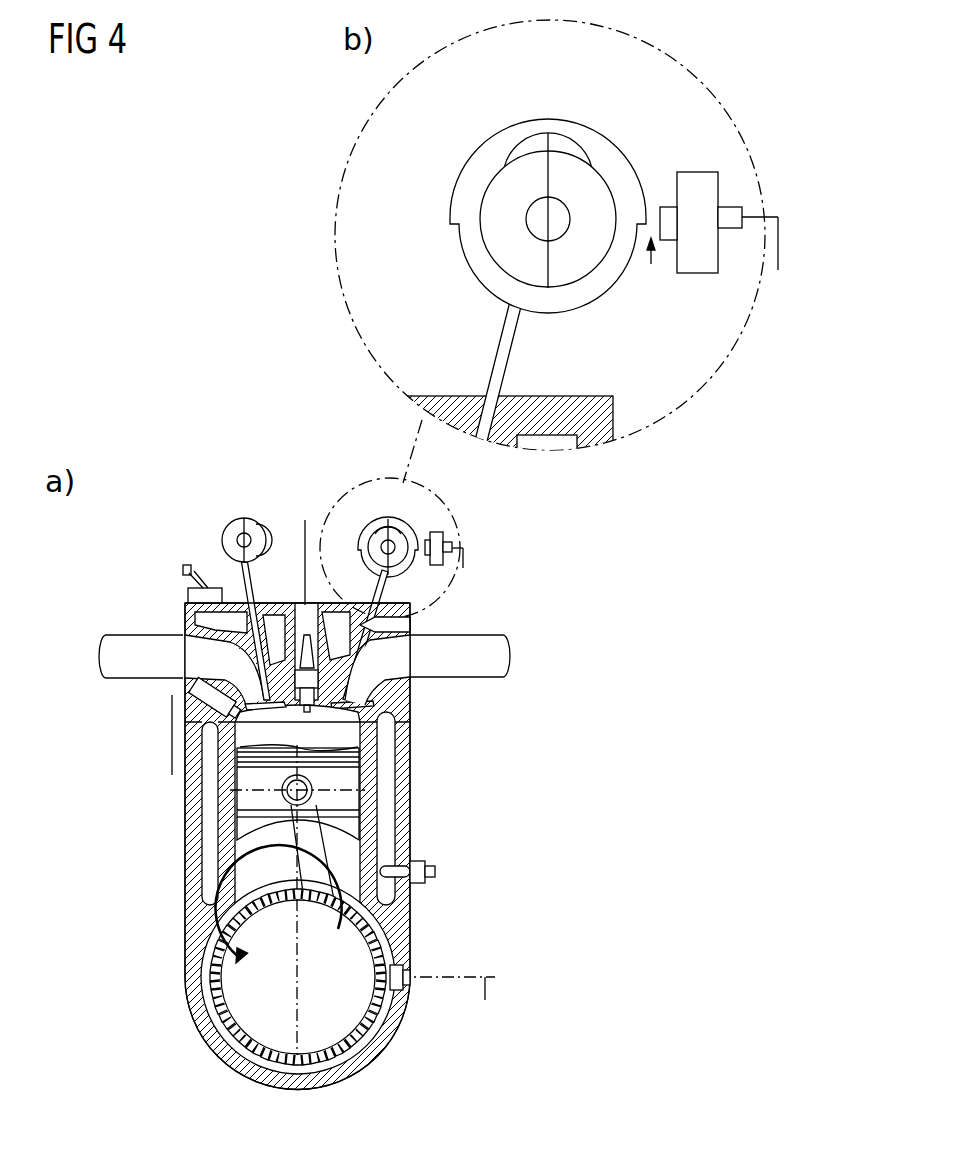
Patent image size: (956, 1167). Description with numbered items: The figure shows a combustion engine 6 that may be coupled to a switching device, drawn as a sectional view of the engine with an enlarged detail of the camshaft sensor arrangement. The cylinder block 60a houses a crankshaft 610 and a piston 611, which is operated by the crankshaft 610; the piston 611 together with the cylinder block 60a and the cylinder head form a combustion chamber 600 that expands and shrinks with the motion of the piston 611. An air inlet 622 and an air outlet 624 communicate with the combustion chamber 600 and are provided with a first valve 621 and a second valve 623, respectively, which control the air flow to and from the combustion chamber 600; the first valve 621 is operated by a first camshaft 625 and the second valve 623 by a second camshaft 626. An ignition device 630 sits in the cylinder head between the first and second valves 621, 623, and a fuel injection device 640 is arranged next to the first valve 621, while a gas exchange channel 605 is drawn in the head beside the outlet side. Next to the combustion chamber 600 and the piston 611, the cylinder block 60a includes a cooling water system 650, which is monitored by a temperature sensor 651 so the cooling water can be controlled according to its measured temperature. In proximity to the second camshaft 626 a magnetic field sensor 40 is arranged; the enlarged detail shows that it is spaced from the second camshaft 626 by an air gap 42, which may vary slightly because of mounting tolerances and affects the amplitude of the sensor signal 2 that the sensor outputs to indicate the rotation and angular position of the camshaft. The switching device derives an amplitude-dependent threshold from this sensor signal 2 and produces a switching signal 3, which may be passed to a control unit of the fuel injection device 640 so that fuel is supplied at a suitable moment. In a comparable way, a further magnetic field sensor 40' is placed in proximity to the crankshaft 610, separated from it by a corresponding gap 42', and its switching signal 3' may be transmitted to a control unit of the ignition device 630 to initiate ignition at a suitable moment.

The combustion engine 6 is at (96, 840).
The cylinder block 60a is at (190, 920).
The combustion chamber 600 is at (240, 730).
The gas exchange channel 605 is at (412, 625).
The crankshaft 610 is at (350, 1050).
The piston 611 is at (358, 782).
The first valve 621 is at (240, 702).
The air inlet 622 is at (147, 648).
The second valve 623 is at (378, 703).
The air outlet 624 is at (492, 668).
The first camshaft 625 is at (236, 528).
The second camshaft 626 is at (600, 147).
The ignition device 630 is at (297, 640).
The fuel injection device 640 is at (184, 700).
The cooling water system 650 is at (392, 746).
The temperature sensor 651 is at (427, 864).
The magnetic field sensor 40 is at (583, 338).
The magnetic field sensor 40' is at (425, 963).
The air gap 42 is at (645, 275).
The sensing direction on crankshaft 42' is at (415, 1024).
The sensor signal 2 is at (780, 238).
The switching signal 3 is at (149, 745).
The switching signal 3' is at (321, 538).